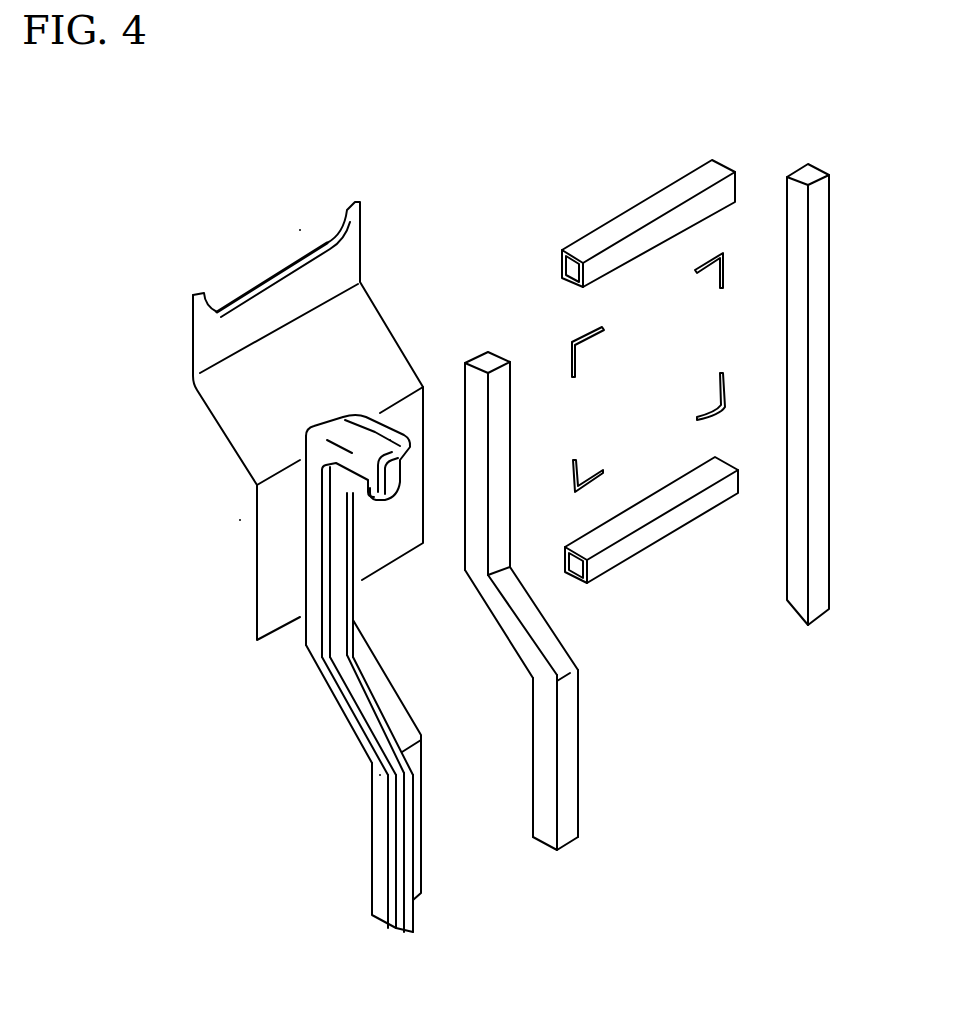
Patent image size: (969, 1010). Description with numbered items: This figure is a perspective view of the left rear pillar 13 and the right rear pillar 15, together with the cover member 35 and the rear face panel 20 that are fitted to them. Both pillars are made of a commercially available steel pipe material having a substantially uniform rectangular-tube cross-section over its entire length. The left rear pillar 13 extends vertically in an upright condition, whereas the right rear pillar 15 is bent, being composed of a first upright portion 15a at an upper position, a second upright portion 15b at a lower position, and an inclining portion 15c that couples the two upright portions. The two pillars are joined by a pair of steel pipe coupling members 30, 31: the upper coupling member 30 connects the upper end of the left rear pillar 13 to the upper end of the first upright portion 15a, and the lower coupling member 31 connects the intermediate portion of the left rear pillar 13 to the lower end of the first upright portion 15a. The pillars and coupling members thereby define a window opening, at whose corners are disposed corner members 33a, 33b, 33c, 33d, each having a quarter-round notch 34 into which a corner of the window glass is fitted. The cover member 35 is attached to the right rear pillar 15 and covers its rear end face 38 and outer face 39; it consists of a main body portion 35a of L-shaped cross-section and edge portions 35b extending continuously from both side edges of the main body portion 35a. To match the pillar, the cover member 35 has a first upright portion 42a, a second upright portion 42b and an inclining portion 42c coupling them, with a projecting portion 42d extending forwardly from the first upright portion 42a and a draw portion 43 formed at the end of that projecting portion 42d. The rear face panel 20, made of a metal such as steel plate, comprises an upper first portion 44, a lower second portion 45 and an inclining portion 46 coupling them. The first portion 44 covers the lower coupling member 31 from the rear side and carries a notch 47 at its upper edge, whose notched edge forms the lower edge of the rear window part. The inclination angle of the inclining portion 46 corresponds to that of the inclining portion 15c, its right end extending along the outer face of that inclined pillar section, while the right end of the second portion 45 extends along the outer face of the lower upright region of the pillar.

The left rear pillar 13 is at (826, 492).
The right rear pillar 15 is at (570, 740).
The first upright portion 15a is at (500, 428).
The second upright portion 15b is at (568, 812).
The inclining portion 15c is at (553, 645).
The rear face panel 20 is at (205, 439).
The upper coupling member 30 is at (628, 215).
The lower coupling member 31 is at (673, 525).
The corner member 33a is at (725, 270).
The corner member 33b is at (722, 410).
The corner member 33c is at (577, 352).
The corner member 33d is at (575, 477).
The notch 34 is at (713, 397).
The cover member 35 is at (306, 669).
The main body portion 35a is at (378, 802).
The edge portions 35b is at (372, 655).
The rear end face 38 is at (533, 752).
The outer face 39 is at (515, 638).
The first upright portion 42a is at (315, 588).
The second upright portion 42b is at (378, 855).
The inclining portion 42c is at (352, 712).
The projecting portion 42d is at (352, 430).
The draw portion 43 is at (394, 448).
The first portion 44 is at (348, 262).
The second portion 45 is at (271, 520).
The inclining portion 46 is at (365, 352).
The notch 47 is at (276, 276).